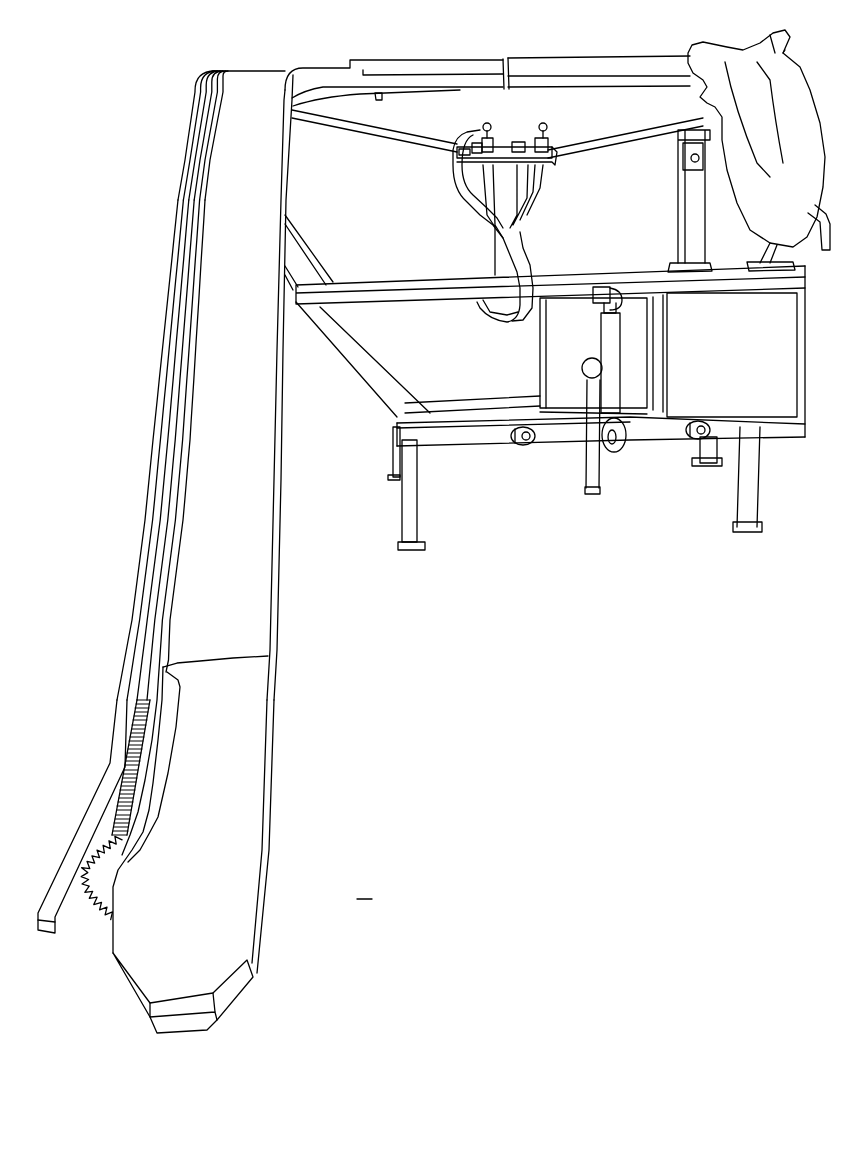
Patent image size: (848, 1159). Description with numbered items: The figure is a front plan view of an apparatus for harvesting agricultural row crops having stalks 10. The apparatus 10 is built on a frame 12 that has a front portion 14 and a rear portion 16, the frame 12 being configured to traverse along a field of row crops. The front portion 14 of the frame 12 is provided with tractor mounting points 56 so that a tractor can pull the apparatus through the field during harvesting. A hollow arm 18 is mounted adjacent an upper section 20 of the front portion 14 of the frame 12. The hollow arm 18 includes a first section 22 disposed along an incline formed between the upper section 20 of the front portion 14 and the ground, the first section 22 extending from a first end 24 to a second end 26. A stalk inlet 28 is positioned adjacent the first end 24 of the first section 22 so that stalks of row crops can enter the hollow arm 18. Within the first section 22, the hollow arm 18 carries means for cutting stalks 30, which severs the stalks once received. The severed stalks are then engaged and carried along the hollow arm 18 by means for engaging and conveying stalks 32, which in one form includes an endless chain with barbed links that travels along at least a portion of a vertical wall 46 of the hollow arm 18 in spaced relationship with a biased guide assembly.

The apparatus for harvesting agricultural row crops having stalks 10 is at (297, 560).
The frame 12 is at (367, 328).
The front portion 14 is at (729, 372).
The rear portion 16 is at (587, 60).
The hollow arm 18 is at (280, 468).
The upper section 20 is at (318, 67).
The first section 22 is at (285, 149).
The first end 24 is at (227, 1013).
The second end 26 is at (207, 72).
The stalk inlet 28 is at (70, 910).
The means for cutting stalks 30 is at (97, 910).
The means for engaging and conveying stalks 32 is at (133, 757).
The vertical wall 46 is at (147, 570).
The tractor mounting points 56 is at (523, 443).